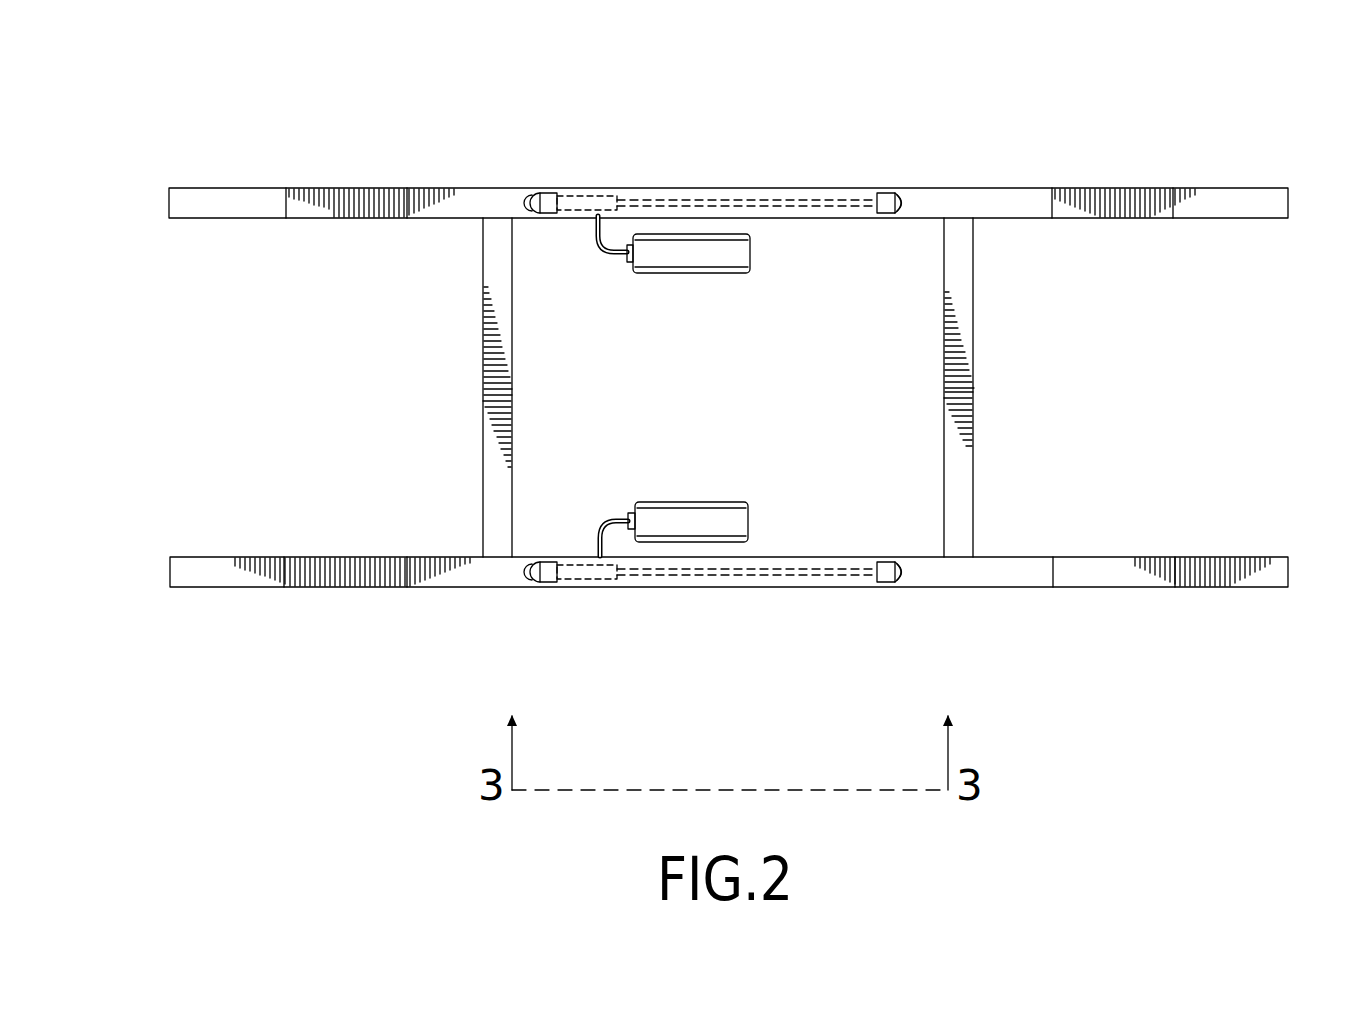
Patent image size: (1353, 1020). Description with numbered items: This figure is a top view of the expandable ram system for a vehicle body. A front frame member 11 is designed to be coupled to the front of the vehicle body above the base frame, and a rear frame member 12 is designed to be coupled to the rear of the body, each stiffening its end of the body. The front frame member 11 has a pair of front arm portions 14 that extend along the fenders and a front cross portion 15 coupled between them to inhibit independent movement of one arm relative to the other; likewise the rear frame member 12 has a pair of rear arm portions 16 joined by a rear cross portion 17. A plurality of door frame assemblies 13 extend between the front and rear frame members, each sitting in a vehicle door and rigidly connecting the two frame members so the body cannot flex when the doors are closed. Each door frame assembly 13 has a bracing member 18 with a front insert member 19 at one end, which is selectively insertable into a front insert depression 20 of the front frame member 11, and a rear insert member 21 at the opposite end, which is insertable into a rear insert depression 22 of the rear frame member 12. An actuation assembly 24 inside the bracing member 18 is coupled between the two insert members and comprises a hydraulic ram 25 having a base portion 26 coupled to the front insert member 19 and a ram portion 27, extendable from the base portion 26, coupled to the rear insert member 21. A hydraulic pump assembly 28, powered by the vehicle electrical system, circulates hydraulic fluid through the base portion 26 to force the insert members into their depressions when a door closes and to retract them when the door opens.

The front frame member 11 is at (370, 190).
The rear frame member 12 is at (1120, 193).
The door frame assembly 13 is at (751, 382).
The front arm portion 14 is at (190, 192).
The front cross portion 15 is at (488, 375).
The rear arm portion 16 is at (1237, 198).
The rear cross portion 17 is at (967, 357).
The bracing member 18 is at (897, 190).
The front insert member 19 is at (546, 195).
The front insert depression 20 is at (535, 198).
The rear insert member 21 is at (897, 190).
The rear insert depression 22 is at (905, 210).
The actuation assembly 24 is at (632, 190).
The hydraulic ram 25 is at (570, 212).
The base portion 26 is at (593, 197).
The ram portion 27 is at (817, 197).
The hydraulic pump assembly 28 is at (712, 258).